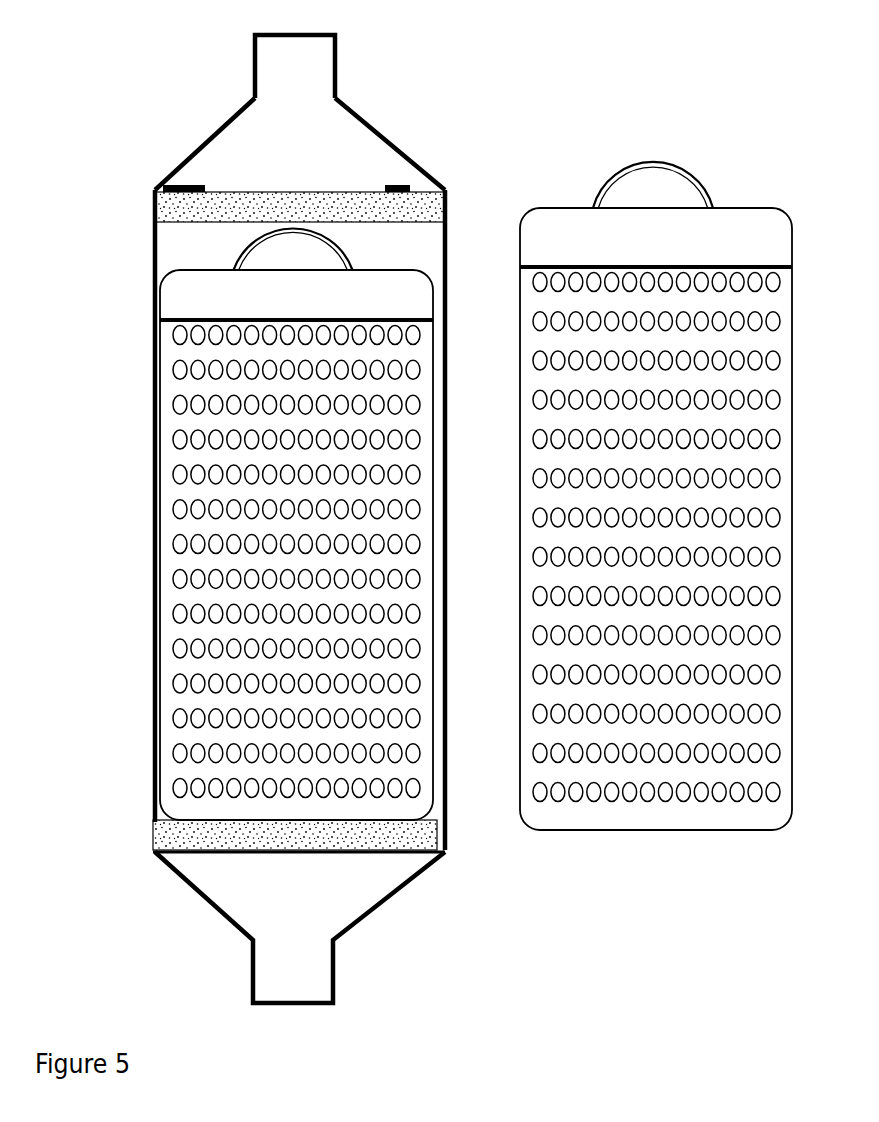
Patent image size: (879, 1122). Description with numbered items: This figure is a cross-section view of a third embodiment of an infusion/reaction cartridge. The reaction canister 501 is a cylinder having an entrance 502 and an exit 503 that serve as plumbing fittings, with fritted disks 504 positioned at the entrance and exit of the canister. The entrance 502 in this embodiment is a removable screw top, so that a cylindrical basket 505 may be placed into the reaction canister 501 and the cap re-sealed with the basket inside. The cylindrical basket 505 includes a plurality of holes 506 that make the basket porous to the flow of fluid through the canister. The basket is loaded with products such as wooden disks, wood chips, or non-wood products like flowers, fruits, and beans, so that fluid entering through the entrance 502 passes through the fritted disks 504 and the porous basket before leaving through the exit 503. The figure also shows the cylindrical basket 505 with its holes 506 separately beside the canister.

The reaction canister 501 is at (152, 567).
The entrance 502 is at (232, 138).
The exit 503 is at (262, 937).
The fritted disks 504 is at (192, 210).
The cylindrical basket 505 is at (432, 698).
The holes 506 is at (783, 565).